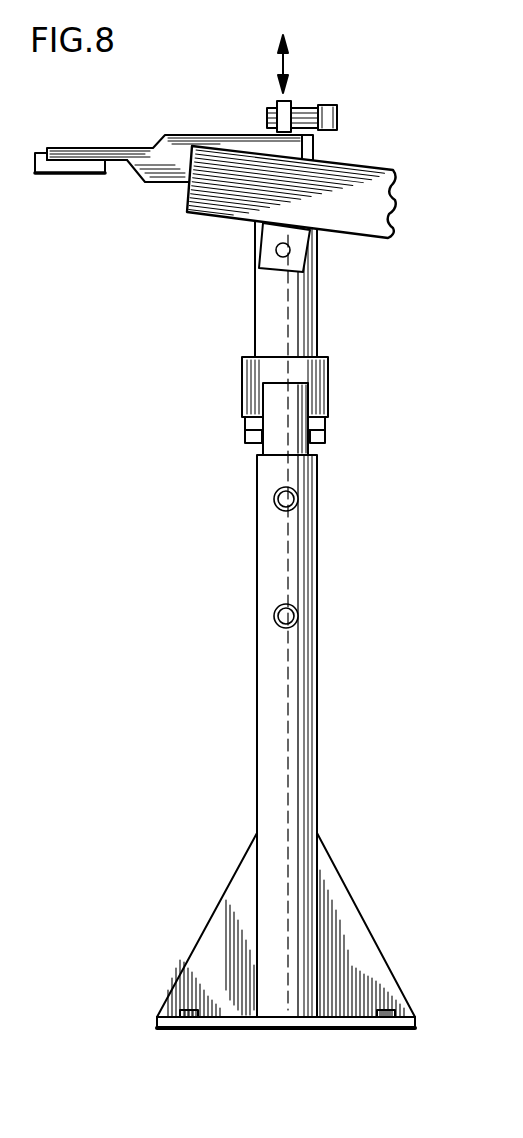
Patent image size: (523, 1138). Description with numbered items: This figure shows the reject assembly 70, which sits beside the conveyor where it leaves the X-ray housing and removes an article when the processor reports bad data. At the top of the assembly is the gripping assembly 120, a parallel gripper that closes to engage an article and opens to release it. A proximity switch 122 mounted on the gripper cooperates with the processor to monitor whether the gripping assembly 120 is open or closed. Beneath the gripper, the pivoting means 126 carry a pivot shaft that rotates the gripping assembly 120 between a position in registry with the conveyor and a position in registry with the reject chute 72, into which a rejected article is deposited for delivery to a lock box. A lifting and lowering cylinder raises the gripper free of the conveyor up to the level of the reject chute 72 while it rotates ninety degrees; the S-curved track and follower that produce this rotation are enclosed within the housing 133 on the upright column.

The reject assembly 70 is at (200, 482).
The reject chute 72 is at (367, 193).
The gripping assembly 120 is at (112, 134).
The proximity switch 122 is at (337, 105).
The pivoting means 126 is at (334, 276).
The housing 133 is at (297, 328).